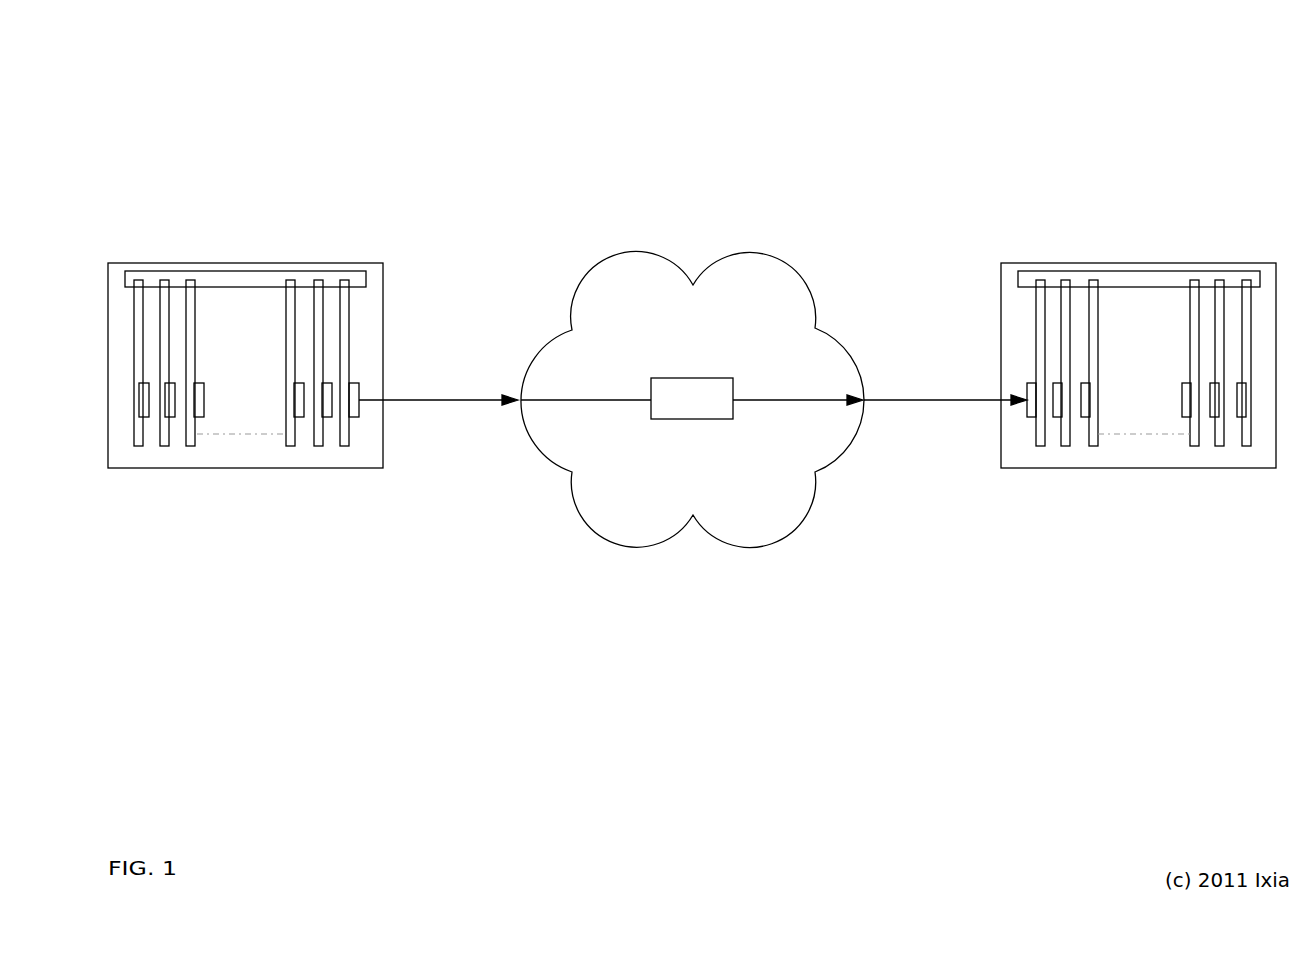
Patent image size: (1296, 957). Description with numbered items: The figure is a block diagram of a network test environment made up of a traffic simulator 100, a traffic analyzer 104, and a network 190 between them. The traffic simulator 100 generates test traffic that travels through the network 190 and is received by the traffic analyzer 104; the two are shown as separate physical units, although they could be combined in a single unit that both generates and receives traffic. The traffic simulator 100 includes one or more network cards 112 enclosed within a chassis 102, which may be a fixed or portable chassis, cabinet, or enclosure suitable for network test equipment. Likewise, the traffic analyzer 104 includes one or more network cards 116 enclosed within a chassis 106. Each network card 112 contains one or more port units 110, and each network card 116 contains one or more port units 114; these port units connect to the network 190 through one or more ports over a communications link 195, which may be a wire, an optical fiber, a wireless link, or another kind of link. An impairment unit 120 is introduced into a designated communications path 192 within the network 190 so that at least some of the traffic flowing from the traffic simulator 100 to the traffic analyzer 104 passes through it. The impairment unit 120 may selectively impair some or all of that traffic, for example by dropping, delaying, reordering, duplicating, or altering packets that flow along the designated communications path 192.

The traffic simulator 100 is at (230, 129).
The chassis 102 is at (307, 262).
The traffic analyzer 104 is at (1136, 127).
The chassis 106 is at (1078, 262).
The port unit 110 is at (352, 418).
The network card 112 is at (343, 445).
The port unit 114 is at (1030, 418).
The network card 116 is at (1037, 447).
The impairment unit 120 is at (706, 378).
The network 190 is at (707, 350).
The designated communications path 192 is at (788, 398).
The communications link 195 is at (478, 400).